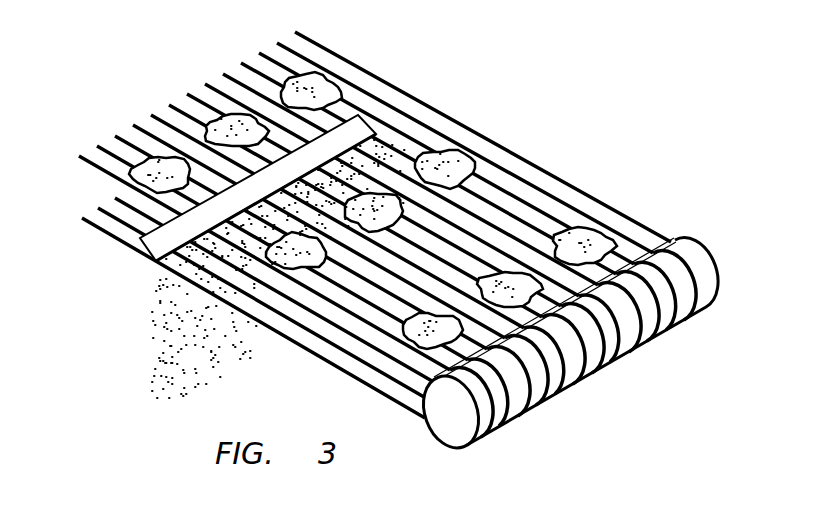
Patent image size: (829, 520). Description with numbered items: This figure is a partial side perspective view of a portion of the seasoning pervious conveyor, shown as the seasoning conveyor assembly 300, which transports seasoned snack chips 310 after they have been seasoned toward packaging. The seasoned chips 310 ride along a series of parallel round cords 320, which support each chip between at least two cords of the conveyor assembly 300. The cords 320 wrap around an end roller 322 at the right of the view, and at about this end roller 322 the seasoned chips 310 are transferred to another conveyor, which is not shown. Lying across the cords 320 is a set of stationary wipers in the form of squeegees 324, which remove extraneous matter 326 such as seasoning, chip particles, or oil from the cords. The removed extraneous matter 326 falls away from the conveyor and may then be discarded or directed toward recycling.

The seasoning conveyor assembly 300 is at (386, 243).
The seasoned snack chips 310 is at (328, 82).
The round cords 320 is at (519, 176).
The end roller 322 is at (438, 427).
The squeegees 324 is at (150, 266).
The extraneous matter 326 is at (176, 378).